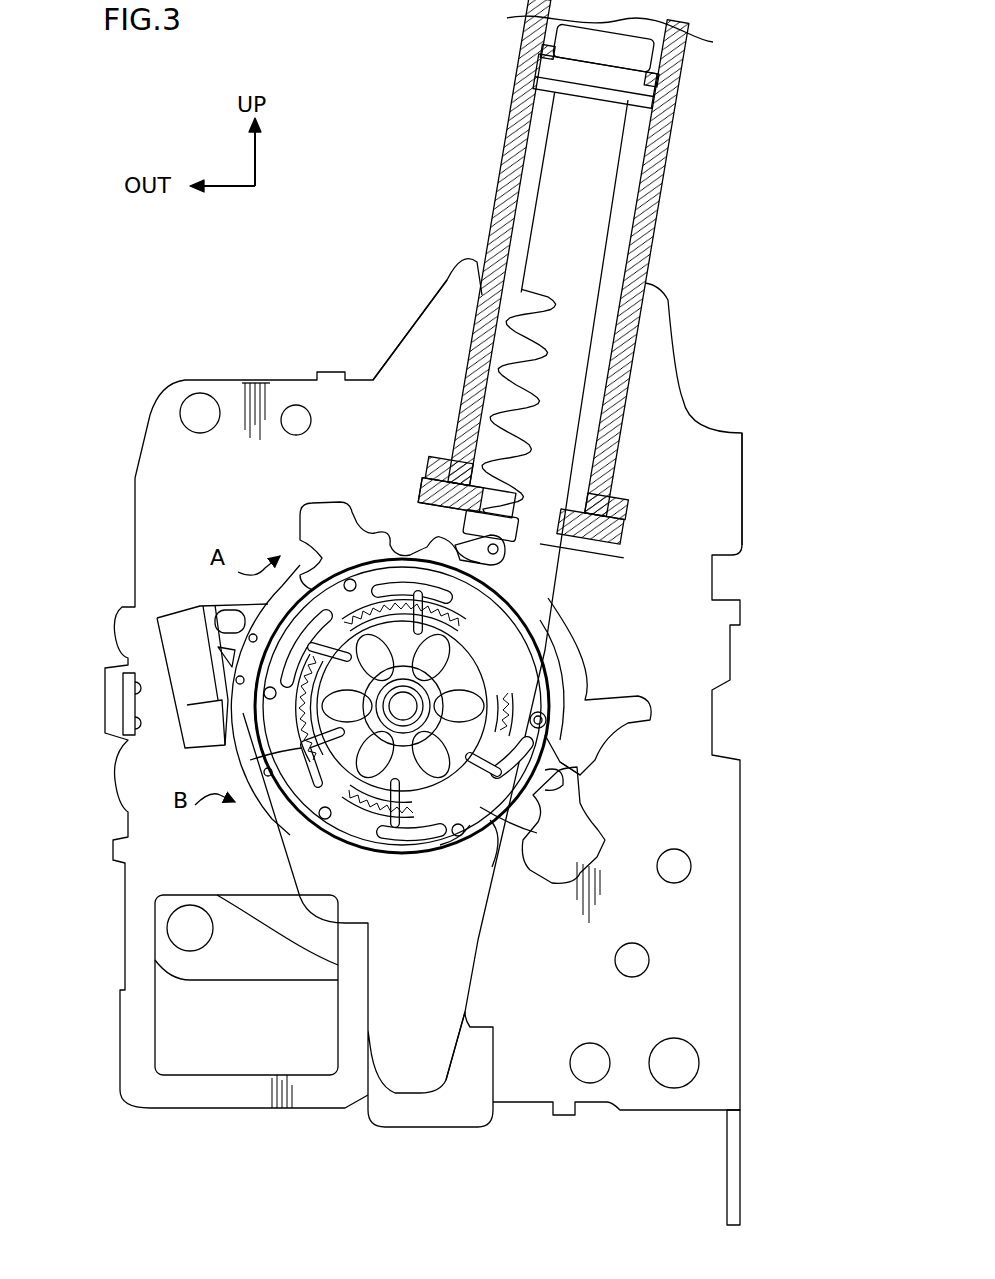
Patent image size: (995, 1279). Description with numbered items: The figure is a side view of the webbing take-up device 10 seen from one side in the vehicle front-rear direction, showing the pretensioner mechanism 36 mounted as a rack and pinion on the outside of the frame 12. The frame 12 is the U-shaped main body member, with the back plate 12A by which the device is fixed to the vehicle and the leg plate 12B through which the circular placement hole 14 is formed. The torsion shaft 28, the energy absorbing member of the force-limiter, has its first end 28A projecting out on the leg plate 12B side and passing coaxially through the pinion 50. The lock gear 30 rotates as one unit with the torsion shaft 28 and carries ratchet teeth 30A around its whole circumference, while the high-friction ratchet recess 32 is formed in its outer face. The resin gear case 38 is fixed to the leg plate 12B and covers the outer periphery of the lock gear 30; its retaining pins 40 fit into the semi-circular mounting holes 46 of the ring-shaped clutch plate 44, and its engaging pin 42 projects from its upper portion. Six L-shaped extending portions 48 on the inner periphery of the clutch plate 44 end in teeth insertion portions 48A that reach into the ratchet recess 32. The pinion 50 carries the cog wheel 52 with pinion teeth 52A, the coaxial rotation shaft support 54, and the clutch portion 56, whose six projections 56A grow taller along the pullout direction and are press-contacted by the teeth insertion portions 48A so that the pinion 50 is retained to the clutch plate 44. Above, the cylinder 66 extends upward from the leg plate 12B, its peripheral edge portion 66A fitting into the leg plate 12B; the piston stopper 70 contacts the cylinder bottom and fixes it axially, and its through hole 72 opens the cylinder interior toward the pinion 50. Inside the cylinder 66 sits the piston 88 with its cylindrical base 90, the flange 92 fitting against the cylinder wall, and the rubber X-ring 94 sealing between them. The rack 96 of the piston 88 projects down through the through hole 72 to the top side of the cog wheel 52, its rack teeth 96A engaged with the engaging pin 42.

The webbing take-up device 10 is at (285, 318).
The frame 12 is at (412, 330).
The back plate 12A is at (727, 1158).
The leg plate 12B is at (258, 382).
The placement hole 14 is at (388, 560).
The torsion shaft 28 is at (403, 706).
The first end 28A is at (410, 715).
The lock gear 30 is at (580, 790).
The ratchet teeth 30A is at (525, 823).
The ratchet recess 32 is at (360, 790).
The pretensioner mechanism 36 is at (655, 622).
The gear case 38 is at (205, 603).
The retaining pins 40 is at (548, 718).
The engaging pin 42 is at (505, 555).
The clutch plate 44 is at (408, 548).
The mounting holes 46 is at (316, 820).
The extending portions 48 is at (300, 790).
The teeth insertion portions 48A is at (250, 760).
The pinion 50 is at (372, 600).
The cog wheel 52 is at (470, 650).
The pinion teeth 52A is at (510, 735).
The rotation shaft support 54 is at (560, 780).
The clutch portion 56 is at (585, 835).
The projections 56A is at (445, 800).
The cylinder 66 is at (500, 185).
The peripheral edge portion 66A is at (625, 500).
The piston stopper 70 is at (630, 520).
The through hole 72 is at (598, 538).
The piston 88 is at (548, 150).
The base 90 is at (553, 38).
The flange 92 is at (530, 78).
The X-ring 94 is at (540, 55).
The rack 96 is at (515, 237).
The rack teeth 96A is at (487, 318).